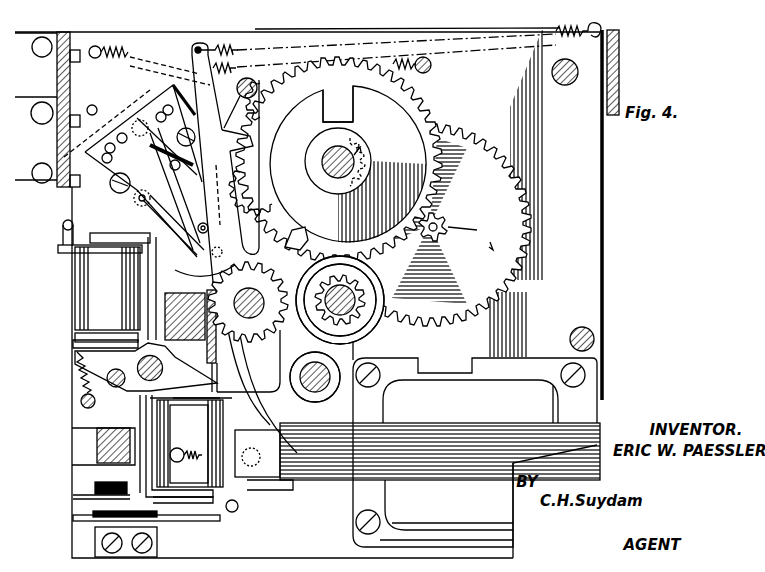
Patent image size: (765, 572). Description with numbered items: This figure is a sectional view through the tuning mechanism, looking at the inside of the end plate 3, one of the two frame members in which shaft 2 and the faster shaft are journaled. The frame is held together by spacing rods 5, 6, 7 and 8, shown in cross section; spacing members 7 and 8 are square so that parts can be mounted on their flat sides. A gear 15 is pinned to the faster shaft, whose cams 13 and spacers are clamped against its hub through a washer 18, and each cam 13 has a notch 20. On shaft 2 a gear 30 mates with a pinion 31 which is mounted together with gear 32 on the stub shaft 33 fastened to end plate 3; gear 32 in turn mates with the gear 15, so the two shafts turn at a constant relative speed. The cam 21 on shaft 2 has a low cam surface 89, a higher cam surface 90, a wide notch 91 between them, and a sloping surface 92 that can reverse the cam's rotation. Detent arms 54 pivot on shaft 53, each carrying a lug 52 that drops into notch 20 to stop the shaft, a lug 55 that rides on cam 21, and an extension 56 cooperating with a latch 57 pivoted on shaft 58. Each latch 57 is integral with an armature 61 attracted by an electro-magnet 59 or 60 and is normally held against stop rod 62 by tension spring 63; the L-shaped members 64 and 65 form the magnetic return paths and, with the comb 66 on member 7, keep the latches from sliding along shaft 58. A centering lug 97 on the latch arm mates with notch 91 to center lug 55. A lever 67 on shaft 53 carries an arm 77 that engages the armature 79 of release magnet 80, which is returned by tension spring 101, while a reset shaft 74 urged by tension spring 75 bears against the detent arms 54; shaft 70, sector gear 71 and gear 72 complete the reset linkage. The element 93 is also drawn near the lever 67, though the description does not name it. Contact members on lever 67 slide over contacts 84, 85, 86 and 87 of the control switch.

The shaft 2 is at (330, 176).
The end plate 3 is at (603, 190).
The spacing rod 5 is at (565, 85).
The spacing rod 6 is at (596, 331).
The spacing member 7 is at (189, 338).
The spacing member 8 is at (97, 456).
The cam 13 is at (386, 311).
The gear 15 is at (351, 322).
The washer 18 is at (262, 466).
The notch 20 is at (343, 262).
The cam 21 is at (305, 113).
The gear 30 is at (412, 106).
The pinion 31 is at (448, 223).
The gear 32 is at (478, 157).
The stub shaft 33 is at (473, 236).
The lug 52 is at (308, 248).
The shaft 53 is at (248, 302).
The detent arm 54 is at (211, 248).
The lug 55 is at (263, 135).
The extension 56 is at (264, 382).
The latch 57 is at (199, 402).
The shaft 58 is at (163, 372).
The electro-magnet 59 is at (90, 315).
The electro-magnet 60 is at (215, 430).
The armature 61 is at (112, 345).
The stop rod 62 is at (113, 390).
The tension spring 63 is at (80, 378).
The L-shaped member 64 is at (127, 235).
The L-shaped member 65 is at (173, 497).
The comb 66 is at (222, 341).
The lever 67 is at (258, 190).
The shaft 70 is at (335, 382).
The sector gear 71 is at (322, 353).
The gear 72 is at (313, 278).
The reset shaft 74 is at (213, 85).
The tension spring 75 is at (128, 56).
The arm 77 is at (283, 416).
The armature 79 is at (343, 460).
The release magnet 80 is at (531, 372).
The contact 84 is at (110, 164).
The contact 85 is at (115, 140).
The contact 86 is at (143, 136).
The contact 87 is at (168, 103).
The cam surface 89 is at (326, 161).
The cam surface 90 is at (393, 100).
The notch 91 is at (337, 110).
The sloping surface 92 is at (373, 91).
The spring 93 is at (230, 44).
The centering lug 97 is at (322, 170).
The tension spring 101 is at (193, 445).